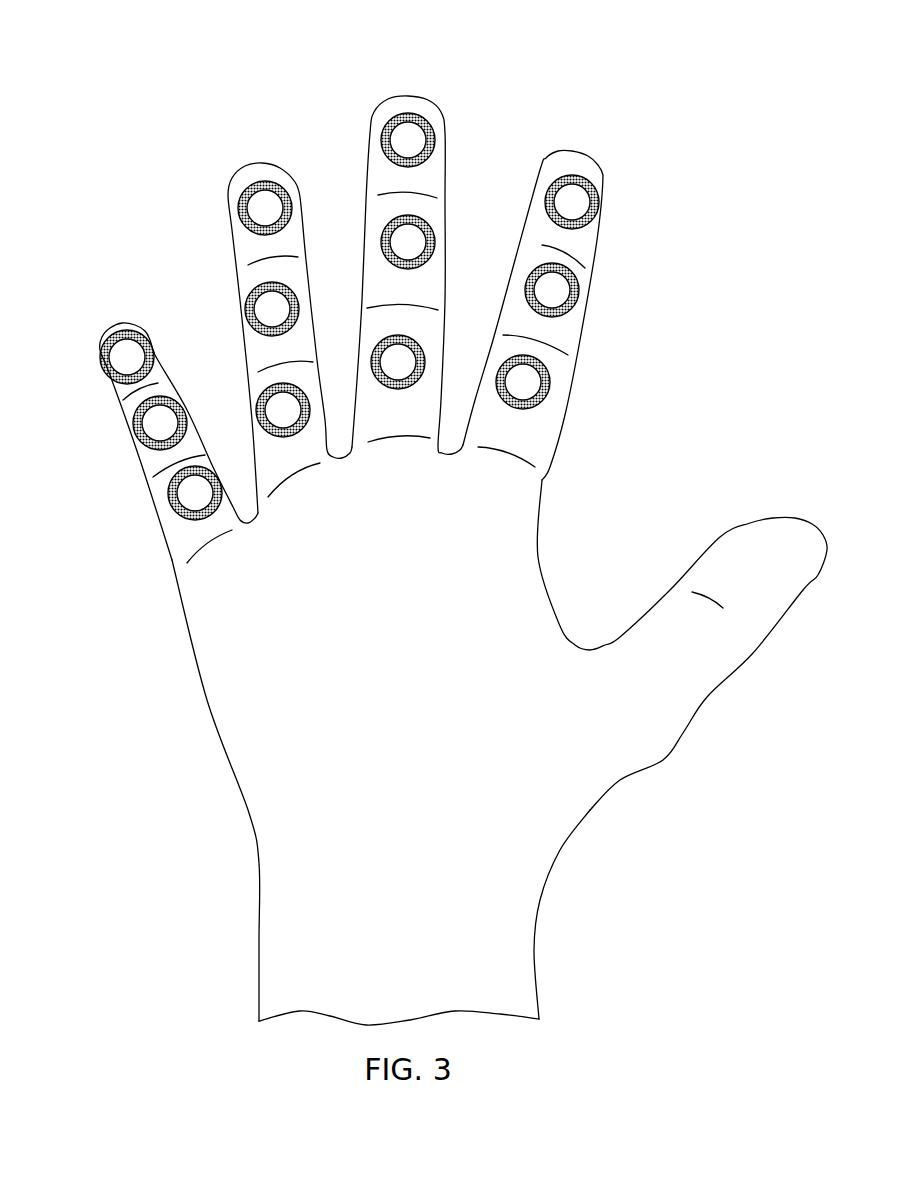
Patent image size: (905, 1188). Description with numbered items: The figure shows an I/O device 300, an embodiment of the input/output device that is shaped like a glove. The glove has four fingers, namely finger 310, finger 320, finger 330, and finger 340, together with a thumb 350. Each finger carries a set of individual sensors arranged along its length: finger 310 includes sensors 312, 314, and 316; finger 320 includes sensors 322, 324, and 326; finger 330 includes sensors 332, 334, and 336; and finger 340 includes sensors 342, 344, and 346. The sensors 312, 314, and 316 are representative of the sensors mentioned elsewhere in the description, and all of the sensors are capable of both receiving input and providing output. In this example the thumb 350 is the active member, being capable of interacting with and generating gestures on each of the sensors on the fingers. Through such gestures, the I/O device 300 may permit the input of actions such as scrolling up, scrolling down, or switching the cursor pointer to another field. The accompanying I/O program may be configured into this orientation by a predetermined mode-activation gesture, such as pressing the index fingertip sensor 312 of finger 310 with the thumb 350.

The I/O device 300 is at (652, 71).
The finger 310 is at (572, 152).
The sensor 312 is at (599, 202).
The sensor 314 is at (579, 291).
The sensor 316 is at (550, 383).
The finger 320 is at (408, 96).
The sensor 322 is at (435, 140).
The sensor 324 is at (435, 242).
The sensor 326 is at (425, 361).
The finger 330 is at (257, 162).
The sensor 332 is at (238, 208).
The sensor 334 is at (245, 310).
The sensor 336 is at (256, 411).
The finger 340 is at (118, 323).
The sensor 342 is at (100, 359).
The sensor 344 is at (133, 426).
The sensor 346 is at (168, 495).
The thumb 350 is at (786, 518).